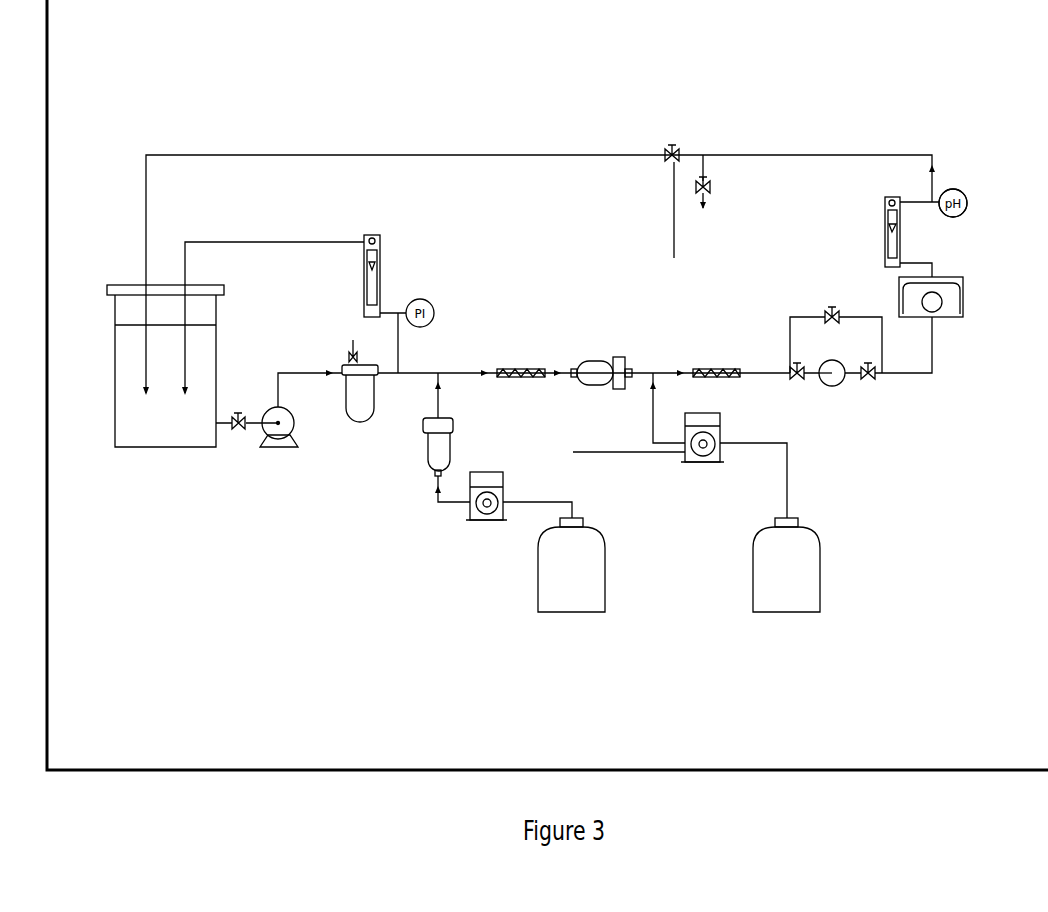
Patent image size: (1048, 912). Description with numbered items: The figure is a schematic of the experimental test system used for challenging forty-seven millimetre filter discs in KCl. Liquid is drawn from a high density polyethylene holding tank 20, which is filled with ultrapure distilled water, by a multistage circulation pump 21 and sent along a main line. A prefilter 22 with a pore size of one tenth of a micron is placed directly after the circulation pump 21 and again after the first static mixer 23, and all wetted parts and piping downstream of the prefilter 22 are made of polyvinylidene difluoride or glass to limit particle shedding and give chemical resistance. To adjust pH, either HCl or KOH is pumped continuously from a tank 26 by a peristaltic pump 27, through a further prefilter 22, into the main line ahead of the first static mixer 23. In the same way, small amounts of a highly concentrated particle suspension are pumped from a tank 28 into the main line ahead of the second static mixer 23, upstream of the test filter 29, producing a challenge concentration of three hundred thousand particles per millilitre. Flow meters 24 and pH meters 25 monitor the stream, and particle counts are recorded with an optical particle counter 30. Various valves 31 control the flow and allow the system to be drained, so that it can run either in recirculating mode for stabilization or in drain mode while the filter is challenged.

The holding tank 20 is at (163, 418).
The multistage circulation pump 21 is at (278, 447).
The prefilter 22 is at (440, 440).
The static mixer 23 is at (700, 368).
The flow meter 24 is at (885, 237).
The pH meter 25 is at (968, 195).
The tank 26 is at (592, 573).
The peristaltic pump 27 is at (495, 468).
The tank 28 is at (778, 543).
The test filter 29 is at (833, 383).
The Optical Particle Counter 30 is at (948, 302).
The valve 31 is at (787, 368).